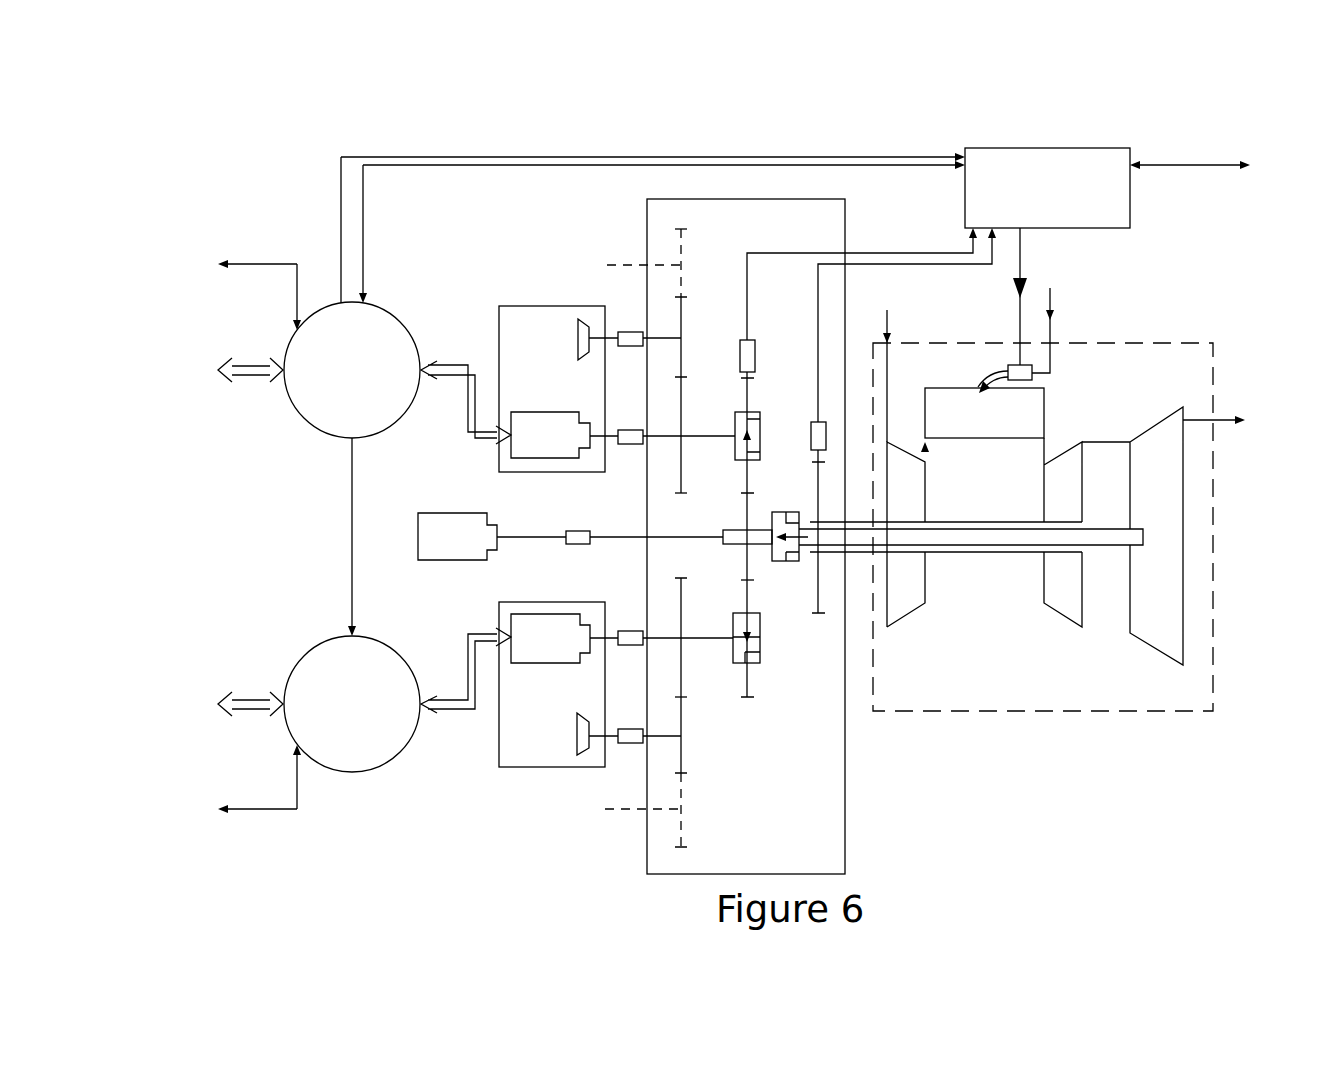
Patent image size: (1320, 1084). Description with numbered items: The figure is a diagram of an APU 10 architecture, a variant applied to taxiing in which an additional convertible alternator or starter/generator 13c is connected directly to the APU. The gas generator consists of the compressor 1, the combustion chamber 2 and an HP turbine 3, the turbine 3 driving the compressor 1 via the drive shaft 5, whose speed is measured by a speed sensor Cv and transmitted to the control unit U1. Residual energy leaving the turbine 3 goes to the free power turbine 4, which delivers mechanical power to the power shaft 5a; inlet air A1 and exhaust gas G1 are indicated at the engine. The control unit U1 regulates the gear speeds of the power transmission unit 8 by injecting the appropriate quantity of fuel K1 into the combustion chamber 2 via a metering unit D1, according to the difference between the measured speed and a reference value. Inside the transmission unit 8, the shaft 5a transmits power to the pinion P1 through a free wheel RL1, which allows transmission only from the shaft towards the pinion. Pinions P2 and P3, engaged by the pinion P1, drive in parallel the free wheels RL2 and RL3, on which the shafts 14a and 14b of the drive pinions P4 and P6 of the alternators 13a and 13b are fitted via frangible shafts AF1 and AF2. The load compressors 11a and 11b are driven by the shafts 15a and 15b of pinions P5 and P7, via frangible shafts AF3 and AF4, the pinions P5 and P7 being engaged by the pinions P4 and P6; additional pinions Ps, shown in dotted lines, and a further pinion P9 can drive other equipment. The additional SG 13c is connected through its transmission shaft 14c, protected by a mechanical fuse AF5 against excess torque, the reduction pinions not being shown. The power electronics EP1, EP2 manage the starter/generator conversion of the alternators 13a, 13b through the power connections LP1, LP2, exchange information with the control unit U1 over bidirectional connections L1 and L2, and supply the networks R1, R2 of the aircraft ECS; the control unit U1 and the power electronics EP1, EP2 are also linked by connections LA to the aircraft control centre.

The power transmission unit 8 is at (845, 199).
The digital control unit U1 is at (1130, 148).
The bidirectional connection L1 is at (467, 168).
The bidirectional connection L2 is at (467, 153).
The aircraft connections LA is at (731, 488).
The network R1 is at (230, 370).
The network R2 is at (230, 704).
The environment control system ECS is at (184, 580).
The power electronics EP1 is at (352, 469).
The power electronics EP2 is at (352, 704).
The power connection LP1 is at (448, 360).
The power connection LP2 is at (482, 628).
The alternator 13a is at (542, 410).
The alternator 13b is at (543, 663).
The additional starter/generator 13c is at (455, 503).
The load compressor 11a is at (583, 320).
The load compressor 11b is at (585, 757).
The frangible shaft AF1 is at (628, 430).
The frangible shaft AF2 is at (630, 631).
The frangible shaft AF3 is at (632, 332).
The frangible shaft AF4 is at (627, 743).
The mechanical fuse AF5 is at (578, 531).
The shaft 15a is at (625, 346).
The shaft 15b is at (618, 729).
The shaft 14a is at (713, 436).
The shaft 14b is at (663, 640).
The transmission shaft 14c is at (627, 528).
The pinion P1 is at (745, 515).
The pinion P2 is at (748, 395).
The pinion P3 is at (748, 590).
The drive pinion P4 is at (683, 492).
The pinion P5 is at (683, 325).
The drive pinion P6 is at (683, 633).
The pinion P7 is at (684, 712).
The pinion 9 P9 is at (818, 470).
The additional pinions Ps is at (682, 250).
The speed sensor Cv is at (758, 340).
The free wheel RL1 is at (788, 512).
The free wheel RL2 is at (733, 413).
The free wheel RL3 is at (762, 665).
The drive shaft 5 is at (996, 552).
The power shaft 5a is at (998, 537).
The combustion chamber 2 is at (925, 410).
The compressor 1 is at (908, 606).
The HP turbine 3 is at (1055, 607).
The power turbine 4 is at (1143, 637).
The APU 10 is at (1184, 361).
The air inlet flow A1 is at (942, 460).
The exhaust gas flow G1 is at (1044, 452).
The fuel K1 is at (1049, 318).
The metering unit D1 is at (1006, 369).